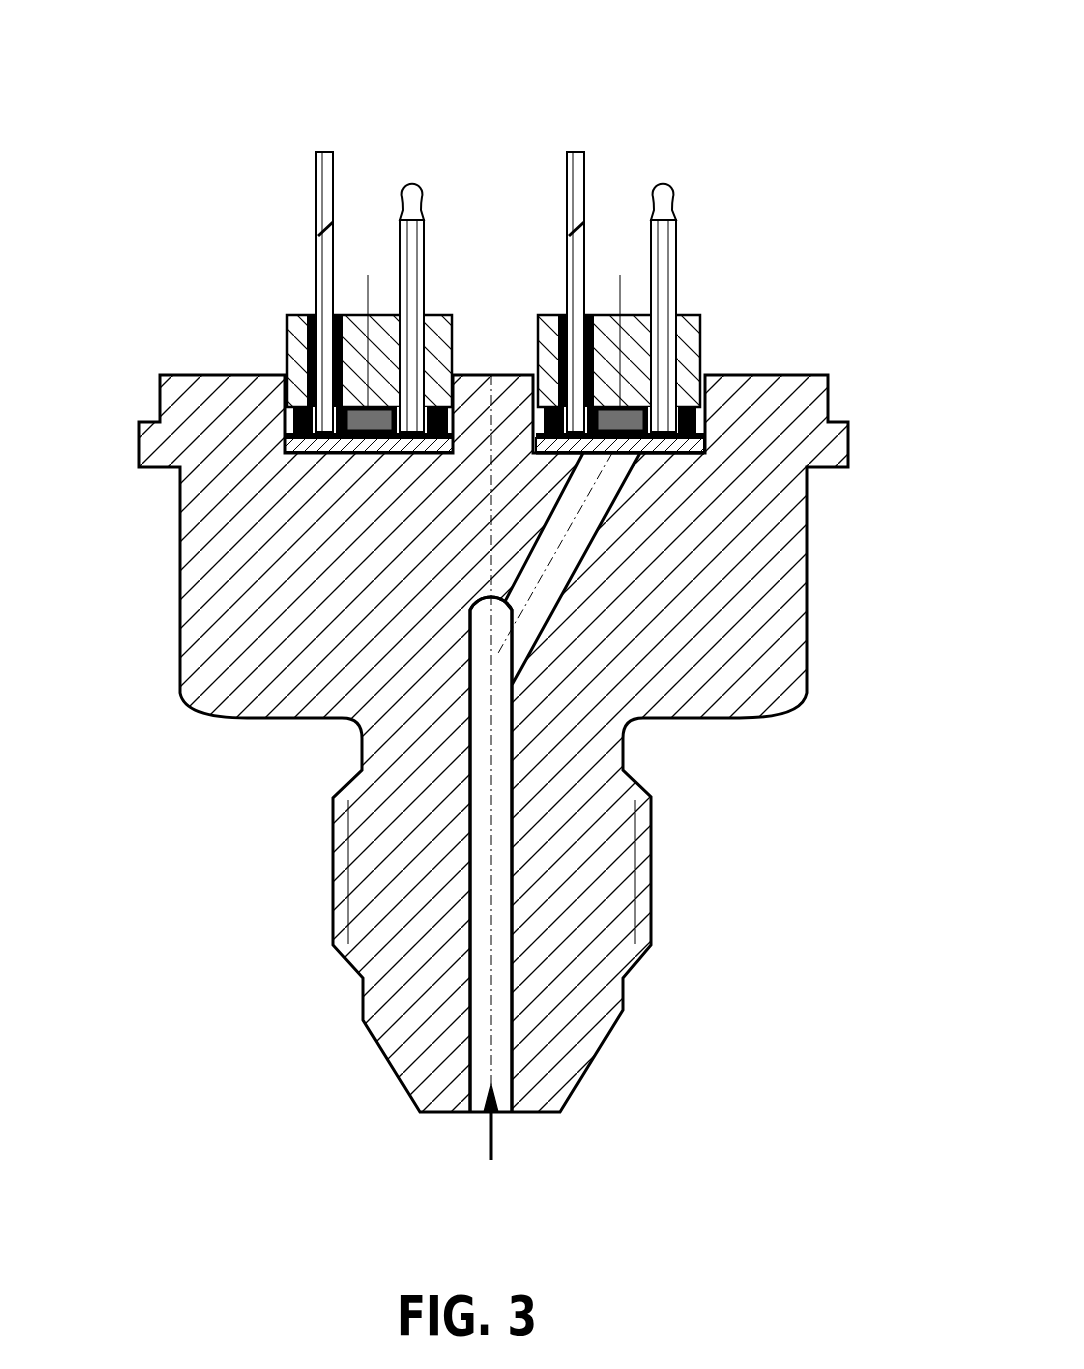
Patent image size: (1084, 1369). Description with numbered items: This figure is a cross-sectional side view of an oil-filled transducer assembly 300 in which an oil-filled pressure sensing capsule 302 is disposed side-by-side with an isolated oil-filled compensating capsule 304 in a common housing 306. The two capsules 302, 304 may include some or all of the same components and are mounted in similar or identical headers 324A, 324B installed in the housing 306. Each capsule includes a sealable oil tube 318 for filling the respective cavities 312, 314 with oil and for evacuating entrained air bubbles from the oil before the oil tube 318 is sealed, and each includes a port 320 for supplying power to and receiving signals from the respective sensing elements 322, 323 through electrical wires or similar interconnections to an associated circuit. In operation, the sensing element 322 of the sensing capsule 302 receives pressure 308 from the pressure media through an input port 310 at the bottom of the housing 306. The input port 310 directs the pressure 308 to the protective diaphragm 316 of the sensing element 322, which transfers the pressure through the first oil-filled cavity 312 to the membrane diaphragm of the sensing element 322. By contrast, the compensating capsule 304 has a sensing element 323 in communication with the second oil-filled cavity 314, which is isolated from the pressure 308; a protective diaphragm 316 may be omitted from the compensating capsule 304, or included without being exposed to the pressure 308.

The oil-filled transducer assembly 300 is at (520, 68).
The oil-filled pressure sensing capsule 302 is at (670, 140).
The isolated oil-filled compensating capsule 304 is at (420, 140).
The housing 306 is at (355, 607).
The pressure 308 is at (493, 1138).
The input port 310 is at (475, 1090).
The first oil-filled cavity 312 is at (682, 445).
The second oil-filled cavity 314 is at (327, 445).
The protective diaphragm 316 is at (652, 452).
The sealable oil tube 318 is at (677, 280).
The port 320 is at (568, 277).
The sensing element 322 is at (617, 415).
The sensing element 323 is at (365, 407).
The header 324A is at (357, 330).
The header 324B is at (690, 322).